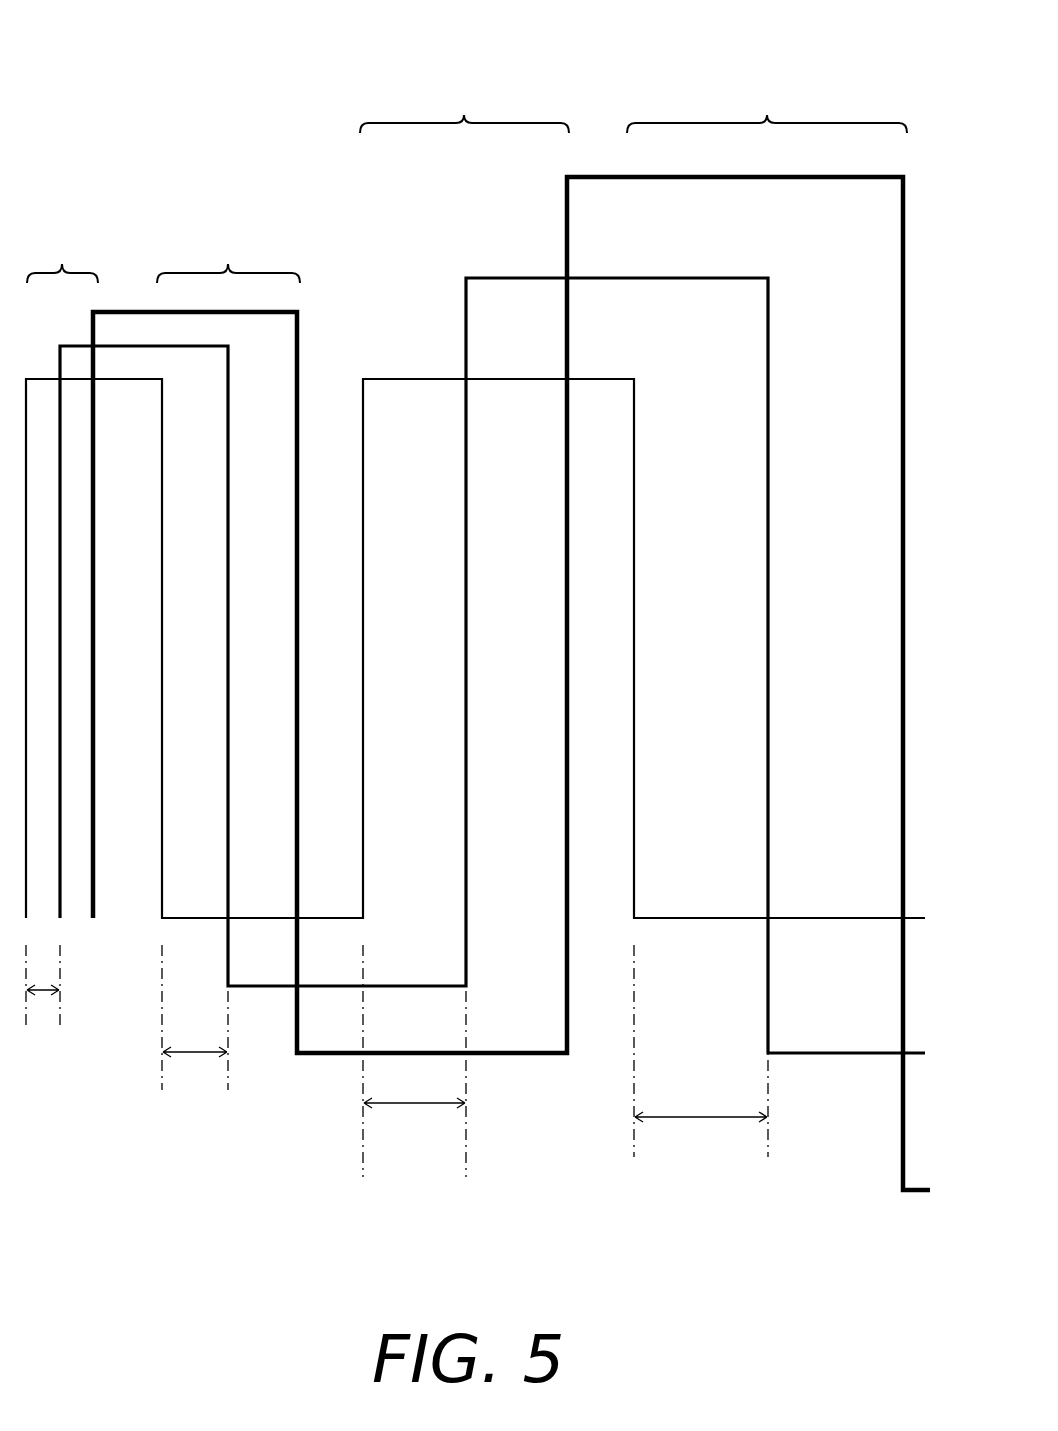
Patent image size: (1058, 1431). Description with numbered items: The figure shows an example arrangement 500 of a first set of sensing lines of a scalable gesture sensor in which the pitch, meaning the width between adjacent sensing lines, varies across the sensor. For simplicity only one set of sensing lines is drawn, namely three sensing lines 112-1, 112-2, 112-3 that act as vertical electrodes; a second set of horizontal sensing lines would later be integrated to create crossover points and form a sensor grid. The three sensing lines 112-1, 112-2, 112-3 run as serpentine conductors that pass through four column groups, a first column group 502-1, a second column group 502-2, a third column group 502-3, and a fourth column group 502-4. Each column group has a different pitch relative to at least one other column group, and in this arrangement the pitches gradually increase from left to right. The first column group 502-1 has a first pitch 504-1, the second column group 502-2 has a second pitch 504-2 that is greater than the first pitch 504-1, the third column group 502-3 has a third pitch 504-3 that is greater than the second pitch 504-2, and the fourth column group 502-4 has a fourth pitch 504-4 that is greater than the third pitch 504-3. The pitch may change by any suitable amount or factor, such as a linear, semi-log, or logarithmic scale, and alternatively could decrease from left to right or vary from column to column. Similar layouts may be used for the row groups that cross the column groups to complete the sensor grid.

The example arrangement 500 is at (100, 50).
The sensing line 112-1 is at (425, 378).
The sensing line 112-2 is at (488, 276).
The sensing line 112-3 is at (566, 213).
The first column group 502-1 is at (62, 258).
The second column group 502-2 is at (228, 258).
The third column group 502-3 is at (464, 108).
The fourth column group 502-4 is at (767, 108).
The first pitch 504-1 is at (44, 992).
The second pitch 504-2 is at (193, 1054).
The third pitch 504-3 is at (410, 1105).
The fourth pitch 504-4 is at (688, 1119).